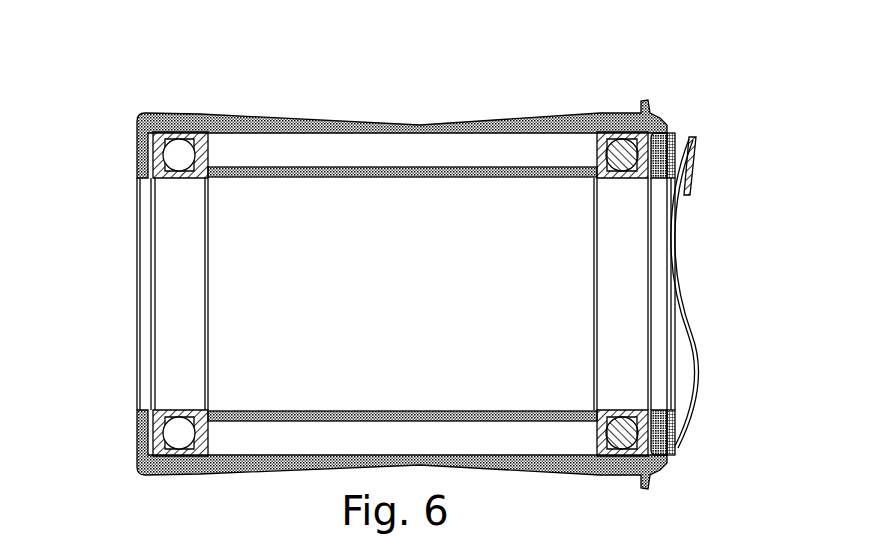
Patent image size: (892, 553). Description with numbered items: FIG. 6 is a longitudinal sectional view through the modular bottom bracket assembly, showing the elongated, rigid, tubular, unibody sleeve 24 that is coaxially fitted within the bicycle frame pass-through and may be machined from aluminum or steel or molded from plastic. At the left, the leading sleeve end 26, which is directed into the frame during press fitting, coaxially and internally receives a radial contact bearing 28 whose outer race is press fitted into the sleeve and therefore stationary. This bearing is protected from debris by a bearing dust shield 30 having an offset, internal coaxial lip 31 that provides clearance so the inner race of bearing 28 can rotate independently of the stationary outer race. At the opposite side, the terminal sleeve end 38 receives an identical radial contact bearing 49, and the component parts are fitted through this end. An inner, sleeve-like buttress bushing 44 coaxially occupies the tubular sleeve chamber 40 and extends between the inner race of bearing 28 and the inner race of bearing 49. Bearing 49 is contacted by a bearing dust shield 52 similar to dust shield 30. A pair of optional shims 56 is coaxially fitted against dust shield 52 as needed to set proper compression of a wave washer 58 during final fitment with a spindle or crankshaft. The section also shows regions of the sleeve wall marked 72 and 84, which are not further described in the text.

The tubular unibody sleeve 24 is at (418, 122).
The leading sleeve end 26 is at (158, 113).
The radial contact bearing 28 is at (182, 180).
The bearing dust shield 30 is at (140, 160).
The offset internal coaxial lip 31 is at (138, 410).
The terminal sleeve end 38 is at (640, 112).
The tubular sleeve chamber 40 is at (405, 441).
The buttress bushing 44 is at (375, 177).
The radial contact bearing 49 is at (622, 178).
The bearing dust shield 52 is at (645, 178).
The shims 56 is at (672, 367).
The wave washer 58 is at (680, 175).
The housing end portion 72 is at (237, 117).
The housing end portion 84 is at (573, 115).